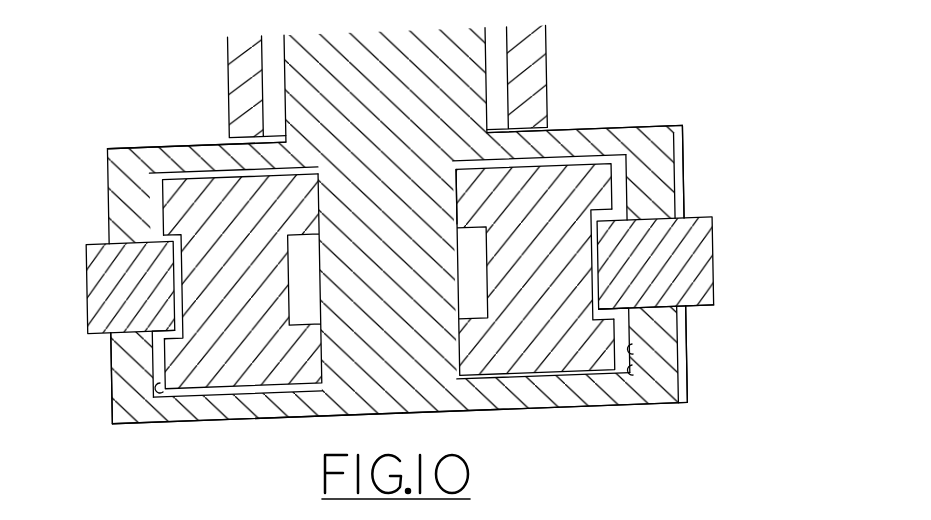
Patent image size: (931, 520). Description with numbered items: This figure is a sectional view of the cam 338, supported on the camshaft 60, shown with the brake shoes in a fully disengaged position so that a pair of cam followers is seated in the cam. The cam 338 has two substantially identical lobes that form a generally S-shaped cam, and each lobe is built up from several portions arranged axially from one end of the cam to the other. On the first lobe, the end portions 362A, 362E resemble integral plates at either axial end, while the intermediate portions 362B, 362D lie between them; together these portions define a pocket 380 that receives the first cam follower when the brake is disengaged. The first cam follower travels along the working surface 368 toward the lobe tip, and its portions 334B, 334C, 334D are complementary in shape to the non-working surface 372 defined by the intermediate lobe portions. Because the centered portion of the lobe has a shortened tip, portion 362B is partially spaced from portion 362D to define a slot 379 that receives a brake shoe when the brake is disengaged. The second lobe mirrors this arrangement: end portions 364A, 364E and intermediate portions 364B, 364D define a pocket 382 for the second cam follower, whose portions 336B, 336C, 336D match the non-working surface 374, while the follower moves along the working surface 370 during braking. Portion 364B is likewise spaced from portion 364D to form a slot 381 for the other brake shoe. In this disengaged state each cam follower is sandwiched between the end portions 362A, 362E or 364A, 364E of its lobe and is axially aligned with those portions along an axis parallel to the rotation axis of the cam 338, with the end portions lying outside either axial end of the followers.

The cam 338 is at (128, 59).
The camshaft 60 is at (445, 62).
The portion of first lobe 362E is at (185, 158).
The portion of first lobe 362D is at (120, 162).
The portion of cam follower 334D is at (128, 190).
The portion of cam follower 334C is at (187, 270).
The portion of cam follower 334B is at (208, 358).
The slot 379 is at (113, 323).
The working surface 368 is at (118, 352).
The non-working surface 372 is at (162, 362).
The portion of first lobe 362B is at (118, 398).
The pocket 380 is at (160, 388).
The portion of first lobe 362A is at (163, 425).
The portion of second lobe 364E is at (572, 140).
The portion of second lobe 364D is at (655, 160).
The portion of cam follower 336D is at (597, 183).
The portion of cam follower 336C is at (575, 250).
The portion of cam follower 336B is at (547, 347).
The slot 381 is at (660, 296).
The working surface 370 is at (668, 322).
The non-working surface 374 is at (633, 354).
The pocket 382 is at (633, 375).
The portion of second lobe 364B is at (670, 382).
The portion of second lobe 364A is at (593, 400).